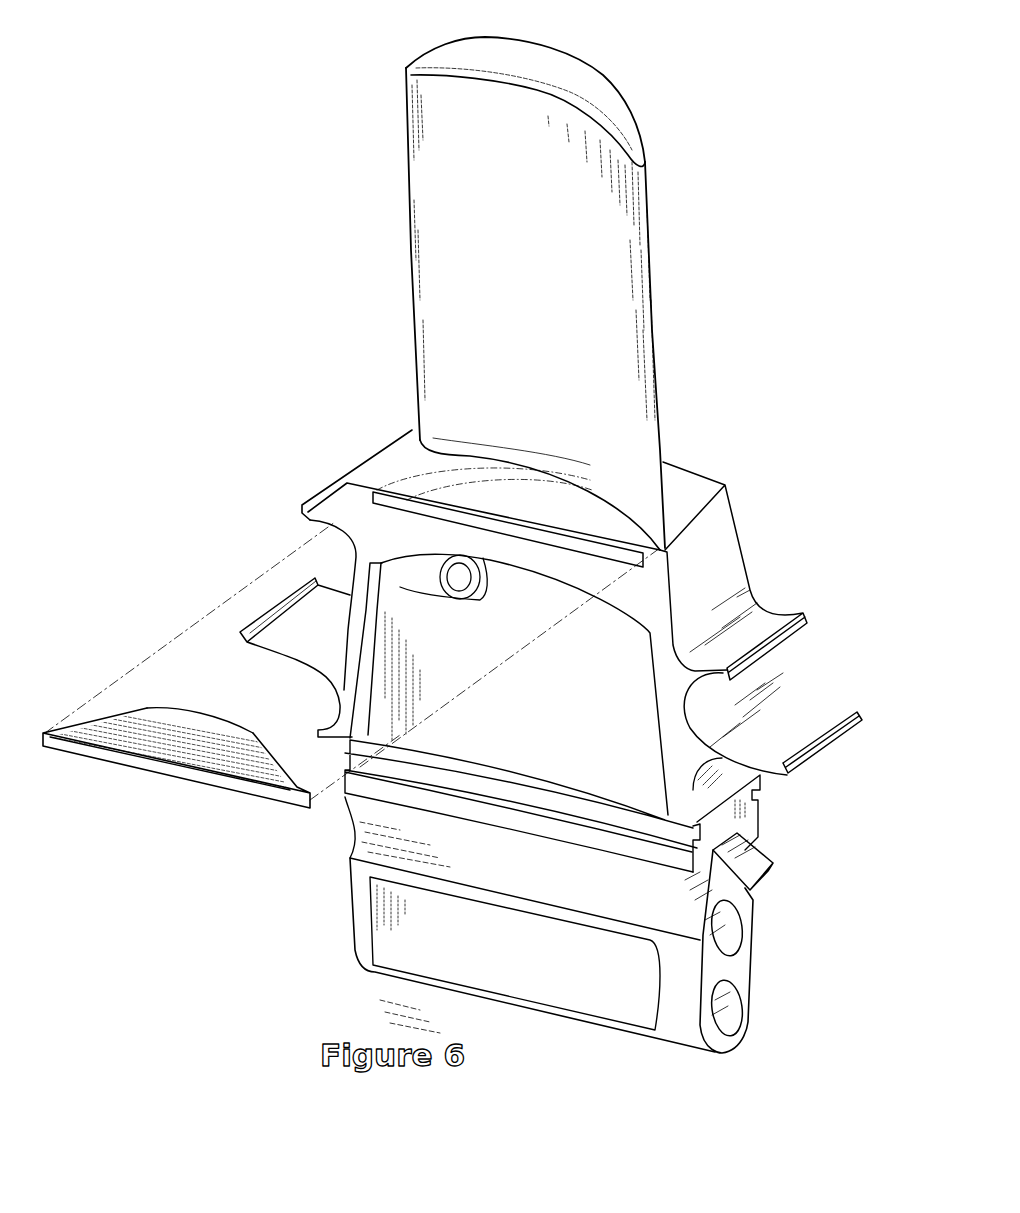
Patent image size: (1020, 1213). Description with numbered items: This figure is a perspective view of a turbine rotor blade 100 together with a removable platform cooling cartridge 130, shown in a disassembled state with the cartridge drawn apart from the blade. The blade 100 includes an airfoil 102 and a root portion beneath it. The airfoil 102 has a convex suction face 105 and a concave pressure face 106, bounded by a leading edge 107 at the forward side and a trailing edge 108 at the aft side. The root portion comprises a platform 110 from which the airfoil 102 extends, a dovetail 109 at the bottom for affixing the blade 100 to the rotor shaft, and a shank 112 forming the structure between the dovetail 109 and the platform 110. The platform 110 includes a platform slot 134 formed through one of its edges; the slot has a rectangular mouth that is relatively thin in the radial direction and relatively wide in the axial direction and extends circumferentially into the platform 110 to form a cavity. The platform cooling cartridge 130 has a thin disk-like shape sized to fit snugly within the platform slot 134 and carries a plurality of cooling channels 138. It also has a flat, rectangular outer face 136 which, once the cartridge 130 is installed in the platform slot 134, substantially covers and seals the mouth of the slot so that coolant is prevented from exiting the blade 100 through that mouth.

The turbine rotor blade 100 is at (658, 58).
The airfoil 102 is at (546, 281).
The suction face 105 is at (675, 175).
The pressure face 106 is at (453, 202).
The leading edge 107 is at (405, 100).
The trailing edge 108 is at (650, 273).
The dovetail 109 is at (755, 925).
The platform 110 is at (377, 455).
The shank 112 is at (857, 717).
The platform cooling cartridge 130 is at (203, 695).
The platform slot 134 is at (593, 550).
The outer face 136 is at (160, 767).
The cooling channels 138 is at (104, 728).